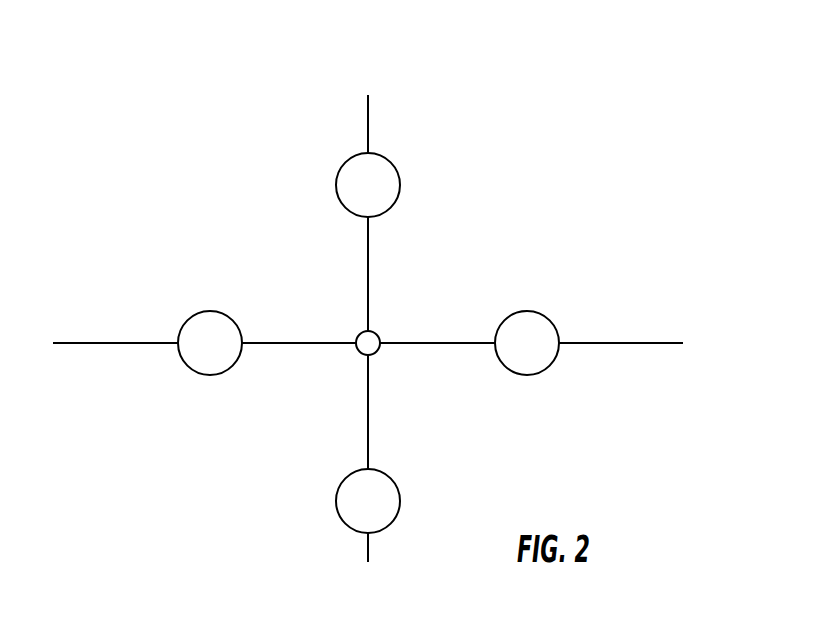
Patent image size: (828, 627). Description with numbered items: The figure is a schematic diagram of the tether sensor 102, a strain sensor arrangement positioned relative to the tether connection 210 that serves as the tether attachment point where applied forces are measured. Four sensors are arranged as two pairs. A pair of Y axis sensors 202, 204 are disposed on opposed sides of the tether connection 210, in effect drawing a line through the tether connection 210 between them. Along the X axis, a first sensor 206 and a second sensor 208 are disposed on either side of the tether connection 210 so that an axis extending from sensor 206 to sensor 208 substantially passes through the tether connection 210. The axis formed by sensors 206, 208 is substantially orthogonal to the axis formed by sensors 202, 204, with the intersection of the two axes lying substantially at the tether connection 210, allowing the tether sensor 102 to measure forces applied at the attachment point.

The tether sensor 102 is at (613, 246).
The Y axis sensor 202 is at (400, 183).
The Y axis sensor 204 is at (400, 503).
The first sensor 206 is at (523, 375).
The second sensor 208 is at (200, 311).
The tether connection 210 is at (380, 339).